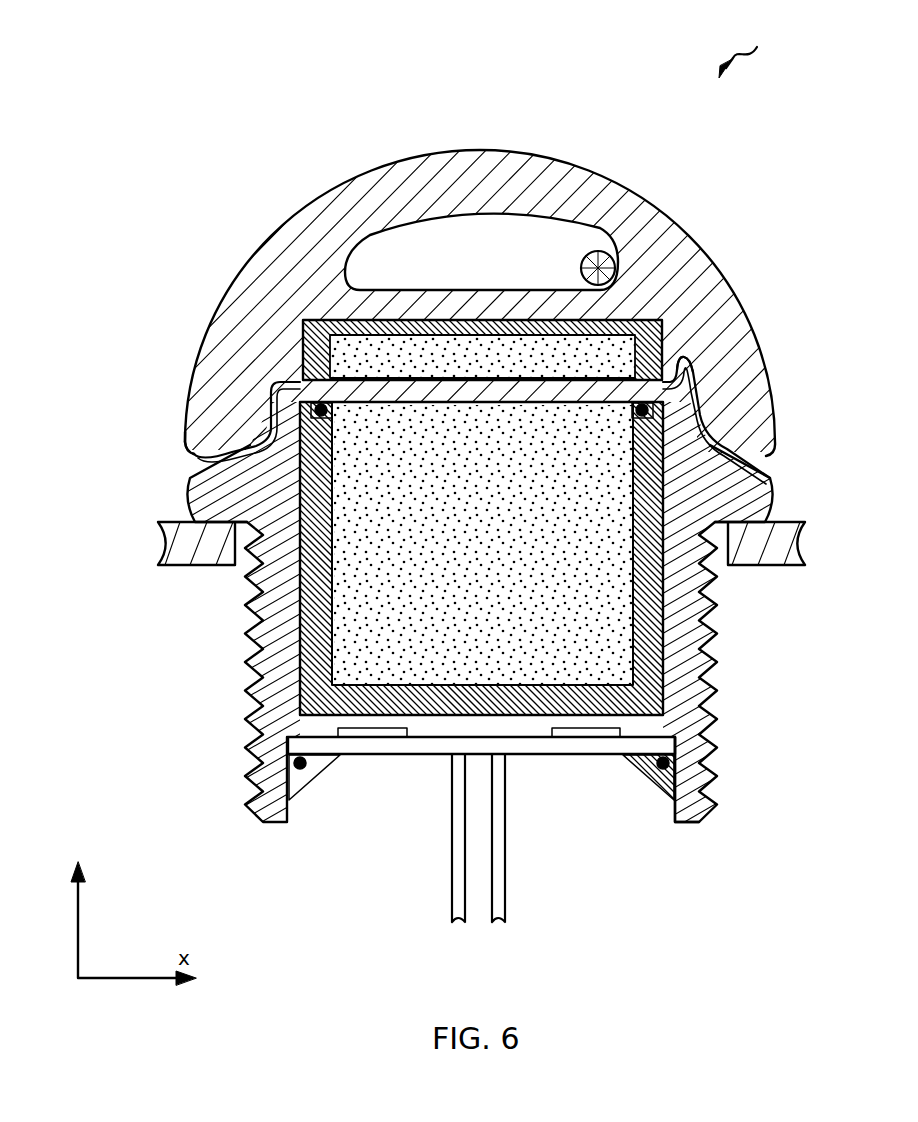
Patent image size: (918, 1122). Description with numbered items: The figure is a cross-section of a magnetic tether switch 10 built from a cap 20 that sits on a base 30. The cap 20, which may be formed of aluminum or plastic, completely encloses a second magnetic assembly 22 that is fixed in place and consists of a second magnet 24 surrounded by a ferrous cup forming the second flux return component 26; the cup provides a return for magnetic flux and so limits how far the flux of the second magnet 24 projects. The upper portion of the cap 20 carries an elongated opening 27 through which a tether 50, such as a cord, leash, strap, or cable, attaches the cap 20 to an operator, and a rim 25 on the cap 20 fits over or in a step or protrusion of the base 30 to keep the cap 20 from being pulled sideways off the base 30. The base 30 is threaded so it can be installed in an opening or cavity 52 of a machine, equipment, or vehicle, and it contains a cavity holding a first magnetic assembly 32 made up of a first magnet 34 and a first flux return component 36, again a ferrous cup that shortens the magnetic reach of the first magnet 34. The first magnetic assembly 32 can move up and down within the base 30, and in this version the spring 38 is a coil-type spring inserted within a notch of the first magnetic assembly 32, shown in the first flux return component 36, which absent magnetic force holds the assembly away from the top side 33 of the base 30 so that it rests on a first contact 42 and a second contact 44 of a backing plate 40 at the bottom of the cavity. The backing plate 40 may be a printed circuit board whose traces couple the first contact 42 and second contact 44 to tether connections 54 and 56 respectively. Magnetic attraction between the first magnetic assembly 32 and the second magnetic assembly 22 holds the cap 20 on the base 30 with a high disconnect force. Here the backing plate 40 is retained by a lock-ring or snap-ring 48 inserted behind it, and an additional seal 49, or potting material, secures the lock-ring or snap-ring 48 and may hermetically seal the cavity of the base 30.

The magnetic tether switch 10 is at (750, 47).
The cap 20 is at (678, 226).
The second magnetic assembly 22 is at (302, 387).
The second magnet 24 is at (355, 323).
The rim 25 is at (185, 440).
The second flux return component 26 is at (385, 336).
The opening 27 is at (447, 212).
The base 30 is at (773, 477).
The first magnetic assembly 32 is at (673, 735).
The top side 33 is at (695, 378).
The first magnet 34 is at (300, 632).
The first flux return component 36 is at (298, 703).
The spring 38 is at (317, 404).
The backing plate 40 is at (520, 746).
The first contact 42 is at (383, 738).
The second contact 44 is at (582, 738).
The lock-ring or snap-ring 48 is at (303, 770).
The seal 49 is at (300, 790).
The tether 50 is at (601, 252).
The opening or cavity 52 is at (215, 567).
The tether connection 54 is at (450, 845).
The tether connection 56 is at (507, 863).